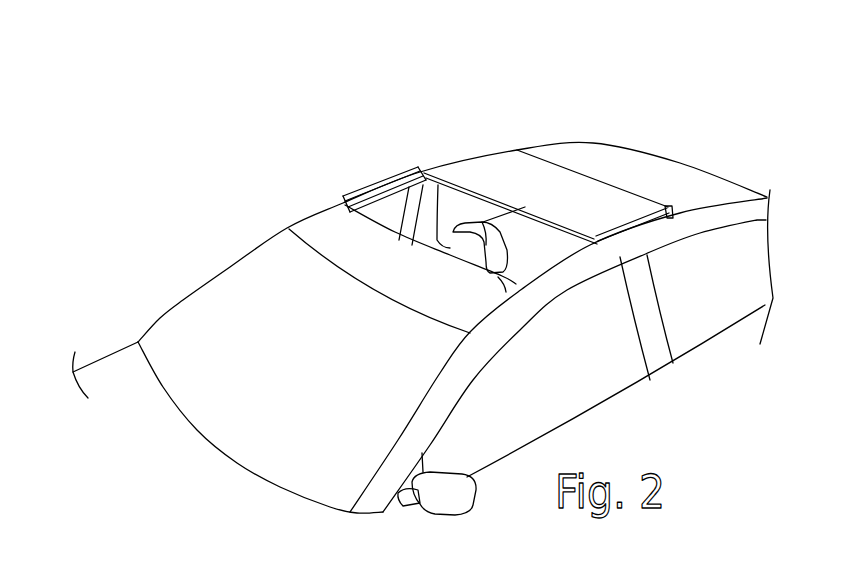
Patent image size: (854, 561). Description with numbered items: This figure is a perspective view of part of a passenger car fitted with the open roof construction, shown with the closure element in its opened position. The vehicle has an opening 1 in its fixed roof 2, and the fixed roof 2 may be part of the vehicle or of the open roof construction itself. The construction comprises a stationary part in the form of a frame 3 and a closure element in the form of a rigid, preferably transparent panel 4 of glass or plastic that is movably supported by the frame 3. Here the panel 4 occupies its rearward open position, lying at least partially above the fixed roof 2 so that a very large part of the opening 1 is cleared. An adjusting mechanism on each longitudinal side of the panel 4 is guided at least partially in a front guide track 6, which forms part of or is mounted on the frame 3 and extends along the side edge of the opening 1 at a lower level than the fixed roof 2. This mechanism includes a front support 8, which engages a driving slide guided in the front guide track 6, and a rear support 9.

The roof opening 1 is at (392, 215).
The fixed roof 2 is at (580, 160).
The frame 3 is at (338, 197).
The panel 4 is at (565, 203).
The front guide track 6 is at (413, 181).
The front support 8 is at (416, 170).
The rear support 9 is at (671, 208).